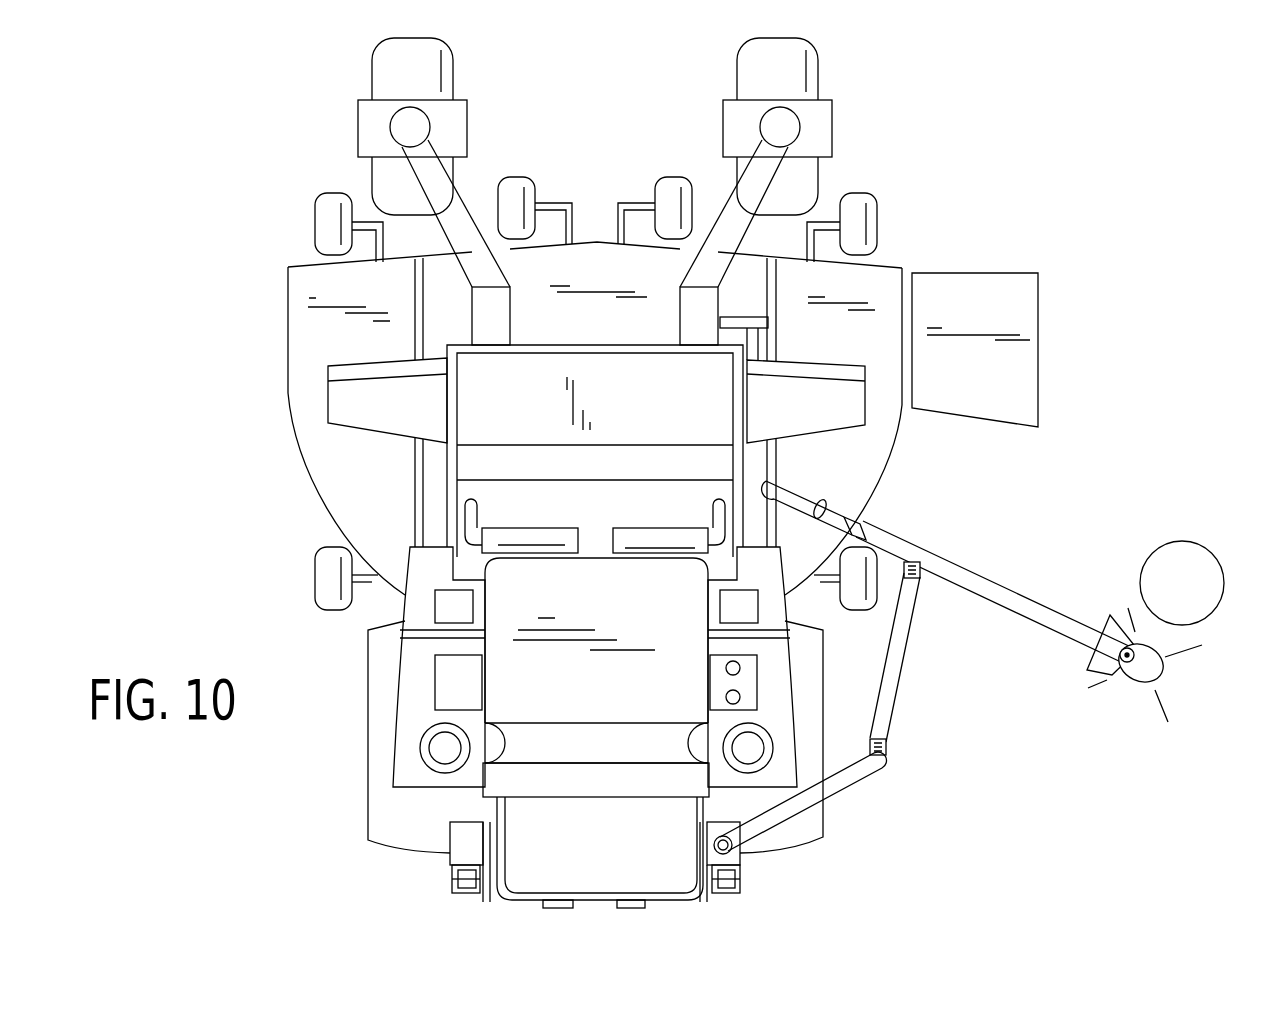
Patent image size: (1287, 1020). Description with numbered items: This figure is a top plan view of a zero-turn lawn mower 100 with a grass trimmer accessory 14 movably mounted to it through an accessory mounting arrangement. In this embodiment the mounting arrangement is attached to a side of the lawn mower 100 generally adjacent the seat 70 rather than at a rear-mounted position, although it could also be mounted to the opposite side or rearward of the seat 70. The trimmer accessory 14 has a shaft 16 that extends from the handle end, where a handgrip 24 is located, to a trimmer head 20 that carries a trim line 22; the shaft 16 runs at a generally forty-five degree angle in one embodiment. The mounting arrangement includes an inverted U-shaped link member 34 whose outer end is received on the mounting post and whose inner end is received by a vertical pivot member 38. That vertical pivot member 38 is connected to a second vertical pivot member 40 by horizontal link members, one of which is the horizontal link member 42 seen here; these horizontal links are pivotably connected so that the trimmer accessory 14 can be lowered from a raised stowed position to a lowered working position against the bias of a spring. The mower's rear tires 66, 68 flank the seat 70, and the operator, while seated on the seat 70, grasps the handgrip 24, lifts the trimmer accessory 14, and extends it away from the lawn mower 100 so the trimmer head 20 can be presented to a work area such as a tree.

The zero-turn lawn mower 100 is at (625, 473).
The trimmer accessory 14 is at (990, 664).
The shaft 16 is at (1037, 613).
The trimmer head 20 is at (1163, 653).
The trim line 22 is at (1130, 607).
The handgrip 24 is at (797, 497).
The inverted U-shaped link member 34 is at (862, 792).
The vertical pivot member 38 is at (882, 765).
The vertical pivot member 40 is at (917, 546).
The horizontal link member 42 is at (893, 690).
The rear tire 66 is at (427, 848).
The rear tire 68 is at (773, 853).
The seat 70 is at (615, 603).